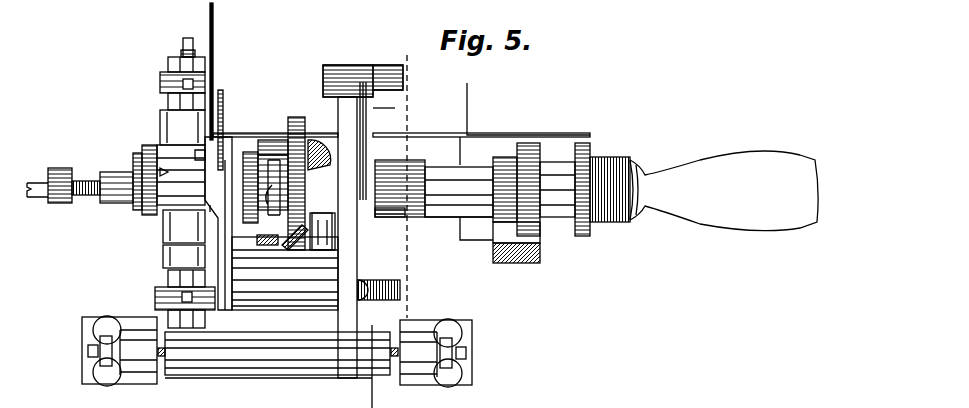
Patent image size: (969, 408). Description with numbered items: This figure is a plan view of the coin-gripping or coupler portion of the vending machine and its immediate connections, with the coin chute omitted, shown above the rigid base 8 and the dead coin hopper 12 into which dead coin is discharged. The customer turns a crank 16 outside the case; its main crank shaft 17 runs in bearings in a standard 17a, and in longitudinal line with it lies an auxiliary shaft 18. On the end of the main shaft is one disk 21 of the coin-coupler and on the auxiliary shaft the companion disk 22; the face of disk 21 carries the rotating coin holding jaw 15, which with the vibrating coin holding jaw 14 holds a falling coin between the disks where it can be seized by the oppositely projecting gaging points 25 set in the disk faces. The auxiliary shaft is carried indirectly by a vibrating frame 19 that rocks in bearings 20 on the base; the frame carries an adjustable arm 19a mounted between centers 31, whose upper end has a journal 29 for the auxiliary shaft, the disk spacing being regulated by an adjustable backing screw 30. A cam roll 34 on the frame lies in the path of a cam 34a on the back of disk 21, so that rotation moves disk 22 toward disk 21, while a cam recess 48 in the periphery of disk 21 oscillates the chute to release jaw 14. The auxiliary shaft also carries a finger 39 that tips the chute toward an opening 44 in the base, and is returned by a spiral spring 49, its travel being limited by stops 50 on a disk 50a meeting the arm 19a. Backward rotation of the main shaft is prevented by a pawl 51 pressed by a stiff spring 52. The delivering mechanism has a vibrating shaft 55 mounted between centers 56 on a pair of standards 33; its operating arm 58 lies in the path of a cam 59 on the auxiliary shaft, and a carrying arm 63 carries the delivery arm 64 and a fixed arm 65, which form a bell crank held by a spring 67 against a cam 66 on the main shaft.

The rigid base 8 is at (411, 176).
The dead coin hopper 12 is at (213, 30).
The vibrating coin holding jaw 14 is at (257, 245).
The rotating coin holding jaw 15 is at (270, 142).
The crank 16 is at (724, 191).
The main crank shaft 17 is at (445, 208).
The standard 17a is at (502, 189).
The auxiliary shaft 18 is at (110, 175).
The vibrating frame 19 is at (322, 250).
The adjustable arm 19a is at (60, 170).
The bearings 20 is at (166, 72).
The disk 21 is at (299, 114).
The disk 22 is at (250, 158).
The gaging points 25 is at (269, 187).
The journal 29 is at (181, 175).
The adjustable backing screw 30 is at (87, 197).
The centers 31 is at (182, 86).
The standards 33 is at (277, 351).
The cam roll 34 is at (320, 215).
The cam 34a is at (316, 150).
The cam projection or finger 39 is at (224, 91).
The opening 44 is at (285, 285).
The cam recess 48 is at (292, 248).
The spiral spring 49 is at (136, 218).
The stops 50 is at (169, 164).
The disk 50a is at (148, 230).
The pawl 51 is at (530, 228).
The stiff spring 52 is at (531, 263).
The vibrating shaft 55 is at (277, 366).
The centers 56 is at (162, 358).
The operating arm 58 is at (245, 322).
The cam 59 is at (193, 151).
The carrying arm 63 is at (348, 262).
The delivery arm 64 is at (395, 108).
The arm 65 is at (365, 68).
The cam 66 is at (382, 217).
The spring 67 is at (370, 148).